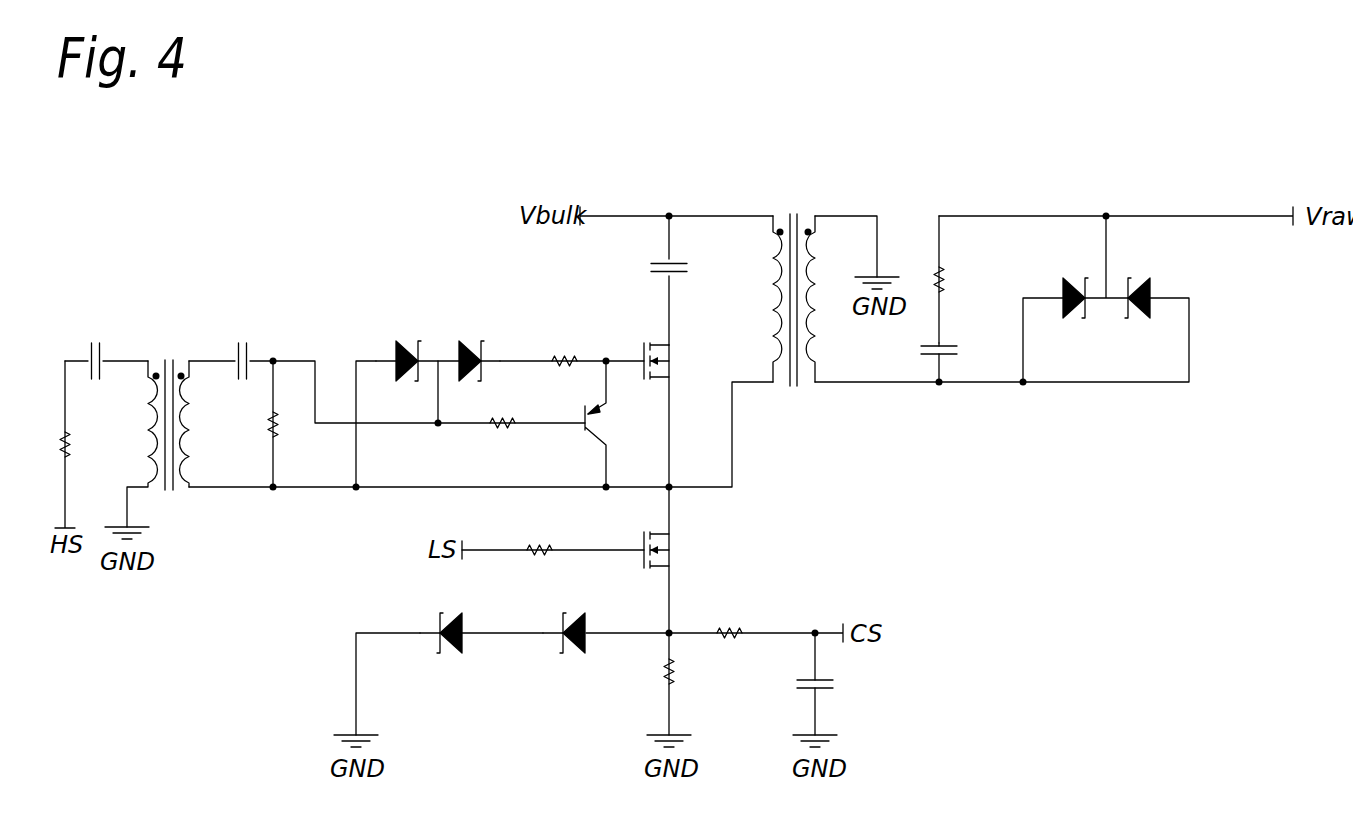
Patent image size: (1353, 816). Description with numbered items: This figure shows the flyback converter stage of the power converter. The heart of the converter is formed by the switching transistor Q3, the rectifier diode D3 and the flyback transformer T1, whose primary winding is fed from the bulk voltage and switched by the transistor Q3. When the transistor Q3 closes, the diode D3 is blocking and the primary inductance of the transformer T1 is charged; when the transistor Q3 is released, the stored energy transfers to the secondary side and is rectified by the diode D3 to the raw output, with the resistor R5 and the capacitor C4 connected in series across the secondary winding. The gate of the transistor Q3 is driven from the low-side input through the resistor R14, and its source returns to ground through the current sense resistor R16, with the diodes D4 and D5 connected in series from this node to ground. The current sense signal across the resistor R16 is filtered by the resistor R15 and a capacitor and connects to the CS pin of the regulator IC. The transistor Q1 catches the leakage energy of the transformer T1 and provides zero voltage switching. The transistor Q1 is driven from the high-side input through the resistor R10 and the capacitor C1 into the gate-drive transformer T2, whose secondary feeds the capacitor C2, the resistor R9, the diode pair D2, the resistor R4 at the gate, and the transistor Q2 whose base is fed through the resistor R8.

The capacitor C1 is at (106, 348).
The resistor R10 is at (91, 444).
The transformer T2 is at (158, 425).
The capacitor C2 is at (231, 348).
The resistor R9 is at (256, 424).
The diode D2 is at (438, 344).
The resistor R4 is at (553, 347).
The resistor R8 is at (511, 410).
The transistor Q2 is at (584, 424).
The transistor Q1 is at (677, 415).
The transformer T1 is at (794, 284).
The resistor R5 is at (958, 279).
The capacitor C4 is at (958, 359).
The diode D3 is at (1090, 299).
The resistor R14 is at (553, 536).
The transistor Q3 is at (677, 560).
The diode D4 is at (443, 649).
The diode D5 is at (567, 649).
The resistor R15 is at (756, 621).
The resistor R16 is at (694, 684).